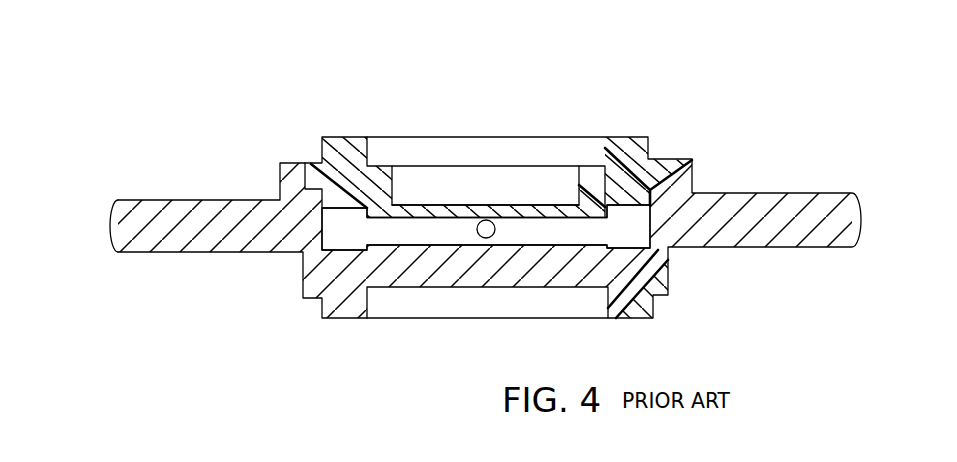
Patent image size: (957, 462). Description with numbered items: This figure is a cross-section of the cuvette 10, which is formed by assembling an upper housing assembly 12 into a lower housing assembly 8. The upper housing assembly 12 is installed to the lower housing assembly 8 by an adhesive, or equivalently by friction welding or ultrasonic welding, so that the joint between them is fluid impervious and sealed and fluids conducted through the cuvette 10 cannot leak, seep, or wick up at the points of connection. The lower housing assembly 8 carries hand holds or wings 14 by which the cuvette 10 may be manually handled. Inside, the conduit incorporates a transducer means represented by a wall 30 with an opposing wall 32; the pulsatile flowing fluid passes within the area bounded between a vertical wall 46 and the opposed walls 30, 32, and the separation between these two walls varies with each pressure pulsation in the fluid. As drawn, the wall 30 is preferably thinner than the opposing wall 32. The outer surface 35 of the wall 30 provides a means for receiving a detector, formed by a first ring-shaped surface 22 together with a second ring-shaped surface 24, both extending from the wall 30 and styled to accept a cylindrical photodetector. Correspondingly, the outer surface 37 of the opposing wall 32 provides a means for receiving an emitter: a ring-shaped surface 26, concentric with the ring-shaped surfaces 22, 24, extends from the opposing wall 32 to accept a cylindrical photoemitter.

The cuvette 10 is at (588, 110).
The lower housing assembly 8 is at (176, 243).
The hand holds or wings 14 is at (210, 200).
The upper housing assembly 12 is at (332, 138).
The second ring-shaped surface 24 is at (632, 137).
The first ring-shaped surface 22 is at (592, 165).
The outer surface of opposed wall 30 35 is at (402, 204).
The wall 30 is at (463, 206).
The vertical wall 46 is at (325, 228).
The opposing wall 32 is at (472, 290).
The outer surface of opposing wall 32 37 is at (530, 288).
The ring-shaped surface 26 is at (624, 306).